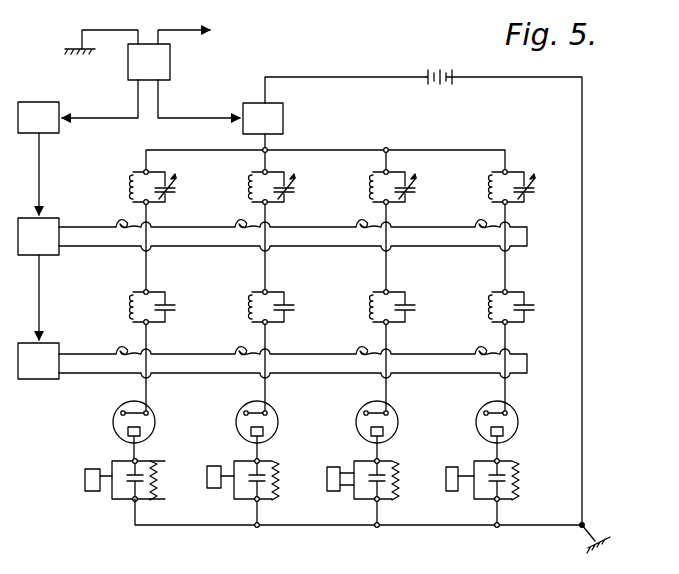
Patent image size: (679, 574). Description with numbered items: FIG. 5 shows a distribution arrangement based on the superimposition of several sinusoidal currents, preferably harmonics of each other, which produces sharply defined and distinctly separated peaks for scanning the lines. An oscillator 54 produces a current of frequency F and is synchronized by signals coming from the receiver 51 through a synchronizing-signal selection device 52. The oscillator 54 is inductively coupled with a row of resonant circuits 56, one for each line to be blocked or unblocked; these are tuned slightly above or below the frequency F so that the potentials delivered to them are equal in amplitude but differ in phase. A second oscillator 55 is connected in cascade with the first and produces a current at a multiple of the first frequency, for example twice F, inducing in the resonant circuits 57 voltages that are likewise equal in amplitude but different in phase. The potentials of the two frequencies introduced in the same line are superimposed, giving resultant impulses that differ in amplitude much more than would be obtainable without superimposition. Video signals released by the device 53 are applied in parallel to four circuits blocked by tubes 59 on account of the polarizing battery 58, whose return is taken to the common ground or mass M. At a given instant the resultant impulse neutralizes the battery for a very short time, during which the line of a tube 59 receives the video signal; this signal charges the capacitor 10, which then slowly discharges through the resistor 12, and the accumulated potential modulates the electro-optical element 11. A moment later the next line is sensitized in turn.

The capacitor 10 is at (129, 484).
The electro-optical element 11 is at (79, 480).
The resistor 12 is at (163, 490).
The receiver 51 is at (149, 62).
The synchronizing-signal selection device 52 is at (38, 117).
The video signal releasing device 53 is at (263, 118).
The oscillator 54 is at (38, 236).
The second oscillator 55 is at (38, 361).
The resonant circuit 56 is at (168, 187).
The resonant circuit 57 is at (166, 307).
The polarizing battery 58 is at (440, 62).
The tube 59 is at (148, 431).
The ground / mass M is at (598, 532).